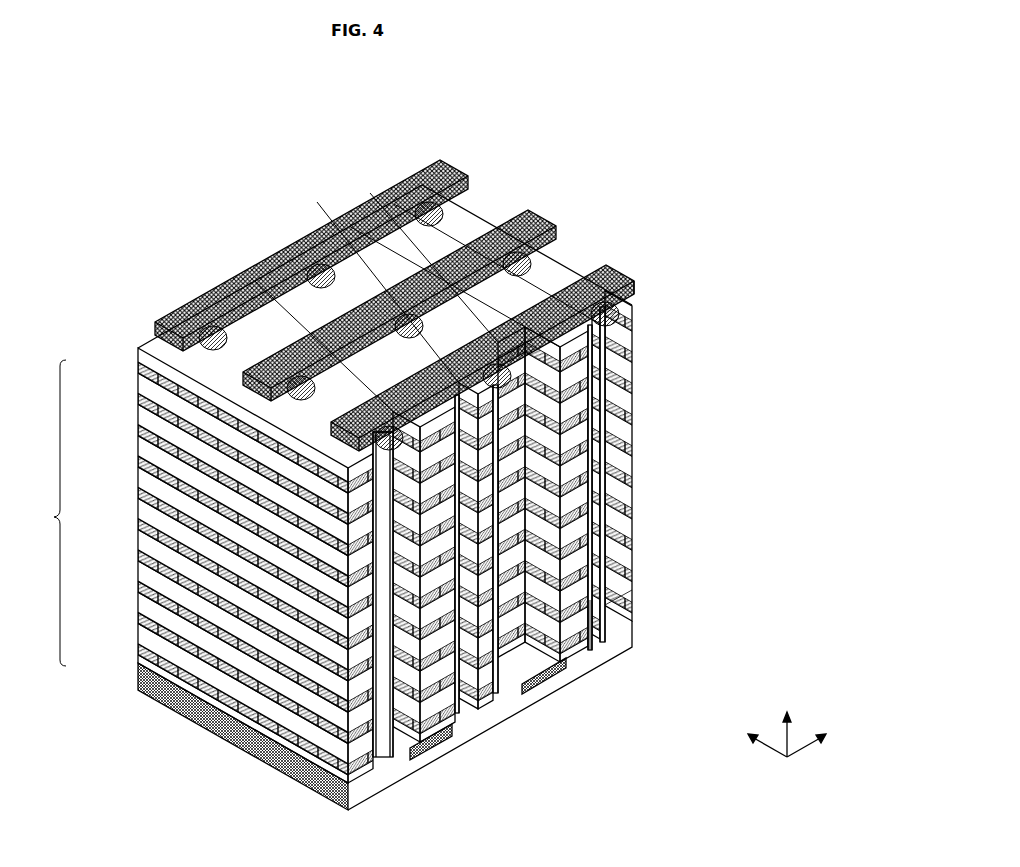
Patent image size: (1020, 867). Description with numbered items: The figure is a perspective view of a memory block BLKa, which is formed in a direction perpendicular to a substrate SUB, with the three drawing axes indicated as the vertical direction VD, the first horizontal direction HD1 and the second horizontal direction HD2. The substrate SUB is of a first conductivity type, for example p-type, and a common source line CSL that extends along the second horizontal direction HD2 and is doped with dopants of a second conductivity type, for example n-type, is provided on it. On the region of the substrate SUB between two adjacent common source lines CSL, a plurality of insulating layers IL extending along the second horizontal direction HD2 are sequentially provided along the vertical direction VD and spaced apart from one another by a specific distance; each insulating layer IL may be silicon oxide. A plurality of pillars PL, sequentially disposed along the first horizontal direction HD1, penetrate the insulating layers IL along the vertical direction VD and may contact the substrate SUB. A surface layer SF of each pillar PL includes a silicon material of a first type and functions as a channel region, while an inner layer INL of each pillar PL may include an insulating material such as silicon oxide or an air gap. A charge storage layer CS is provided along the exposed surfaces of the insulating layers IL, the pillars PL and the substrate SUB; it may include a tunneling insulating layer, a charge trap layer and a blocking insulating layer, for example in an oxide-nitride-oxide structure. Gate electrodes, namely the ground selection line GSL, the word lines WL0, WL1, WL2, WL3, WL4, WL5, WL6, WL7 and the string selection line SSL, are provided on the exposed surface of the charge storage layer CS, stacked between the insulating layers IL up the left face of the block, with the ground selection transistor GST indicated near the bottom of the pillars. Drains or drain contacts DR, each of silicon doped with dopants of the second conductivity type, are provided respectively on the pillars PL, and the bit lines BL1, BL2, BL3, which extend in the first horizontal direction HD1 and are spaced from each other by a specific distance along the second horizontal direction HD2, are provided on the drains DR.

The memory block BLKa is at (662, 149).
The bit line BL1 is at (448, 160).
The bit line BL2 is at (537, 210).
The bit line BL3 is at (622, 262).
The drain or drain contact DR is at (636, 298).
The charge storage layer CS is at (600, 403).
The insulating layer IL is at (612, 492).
The ground selection transistor GST is at (630, 612).
The inner layer INL is at (600, 633).
The surface layer SF is at (591, 633).
The pillar PL is at (646, 717).
The common source line CSL is at (442, 745).
The string selection line SSL is at (136, 368).
The word line WL7 is at (136, 399).
The word line WL6 is at (136, 430).
The word line WL5 is at (136, 461).
The word line WL4 is at (136, 493).
The word line WL3 is at (136, 524).
The word line WL2 is at (136, 555).
The word line WL1 is at (136, 587).
The word line WL0 is at (136, 618).
The ground selection line GSL is at (136, 649).
The substrate SUB is at (136, 678).
The vertical direction VD is at (788, 717).
The first horizontal direction HD1 is at (824, 738).
The second horizontal direction HD2 is at (749, 736).